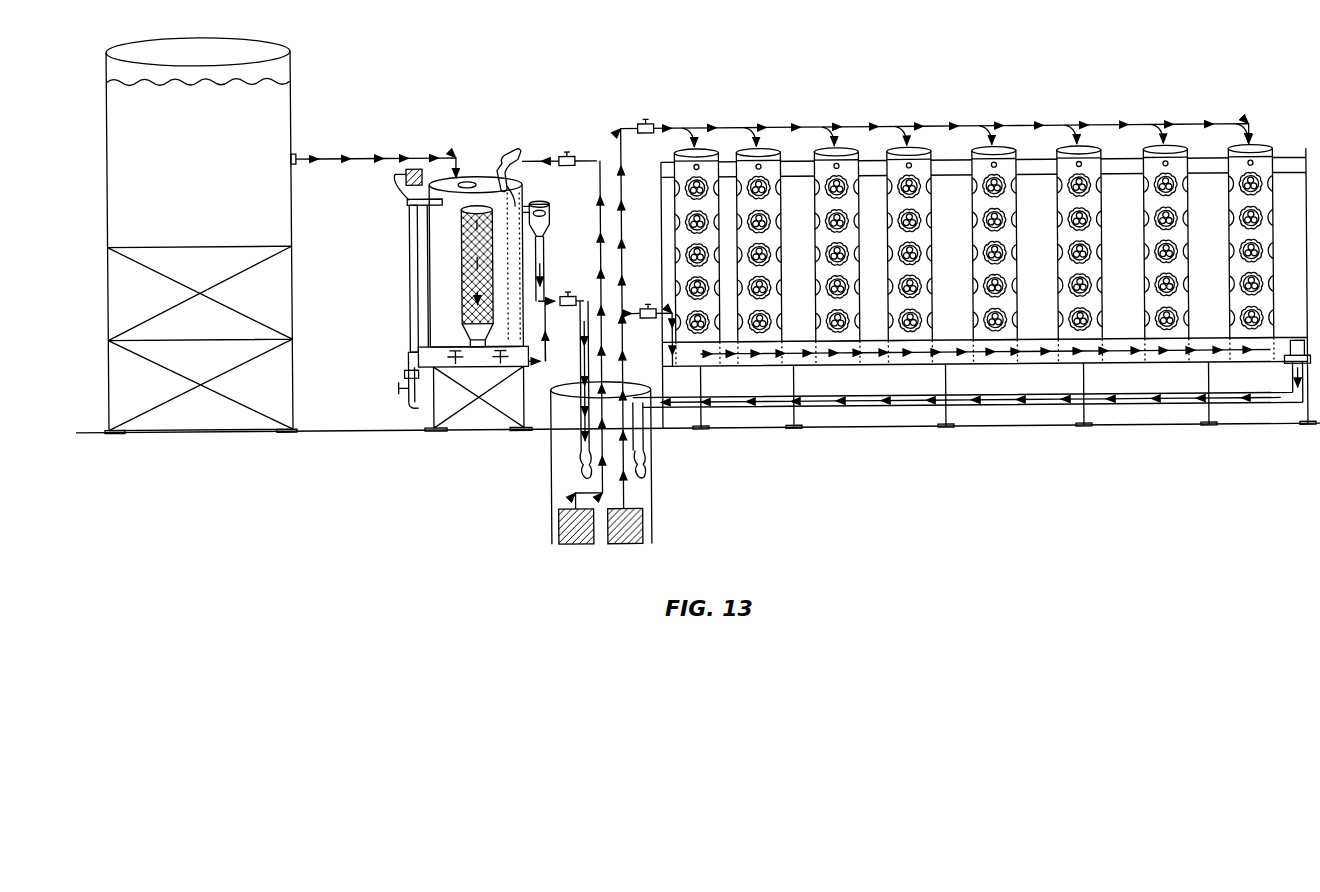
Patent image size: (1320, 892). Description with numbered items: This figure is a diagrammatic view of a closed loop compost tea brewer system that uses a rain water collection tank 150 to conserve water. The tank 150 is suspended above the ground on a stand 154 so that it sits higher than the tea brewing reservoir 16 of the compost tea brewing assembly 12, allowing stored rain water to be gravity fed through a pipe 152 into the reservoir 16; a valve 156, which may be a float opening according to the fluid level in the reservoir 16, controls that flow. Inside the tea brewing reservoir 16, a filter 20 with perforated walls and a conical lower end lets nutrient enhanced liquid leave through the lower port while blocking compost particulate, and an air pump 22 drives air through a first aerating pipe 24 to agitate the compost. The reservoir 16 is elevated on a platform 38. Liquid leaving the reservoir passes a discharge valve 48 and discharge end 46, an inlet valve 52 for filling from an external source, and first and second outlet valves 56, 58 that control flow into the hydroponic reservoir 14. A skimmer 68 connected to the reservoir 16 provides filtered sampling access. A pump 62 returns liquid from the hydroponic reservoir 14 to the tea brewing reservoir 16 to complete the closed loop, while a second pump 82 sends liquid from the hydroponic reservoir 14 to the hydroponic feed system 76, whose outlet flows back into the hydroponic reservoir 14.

The compost tea brewing assembly 12 is at (453, 304).
The hydroponic reservoir 14 is at (559, 349).
The tea brewing reservoir 16 is at (430, 307).
The filter 20 is at (462, 240).
The air pump 22 is at (405, 178).
The first aerating pipe 24 is at (410, 275).
The platform 38 is at (500, 408).
The discharge end 46 is at (404, 404).
The discharge valve 48 is at (407, 372).
The inlet valve 52 is at (455, 375).
The first outlet valve 56 is at (505, 370).
The second outlet valve 58 is at (566, 306).
The pump 62 is at (557, 518).
The skimmer 68 is at (550, 206).
The hydroponic feed system 76 is at (742, 112).
The pump 82 is at (641, 518).
The rain water collection tank 150 is at (292, 108).
The pipe 152 is at (335, 156).
The stand 154 is at (112, 290).
The valve 156 is at (468, 180).